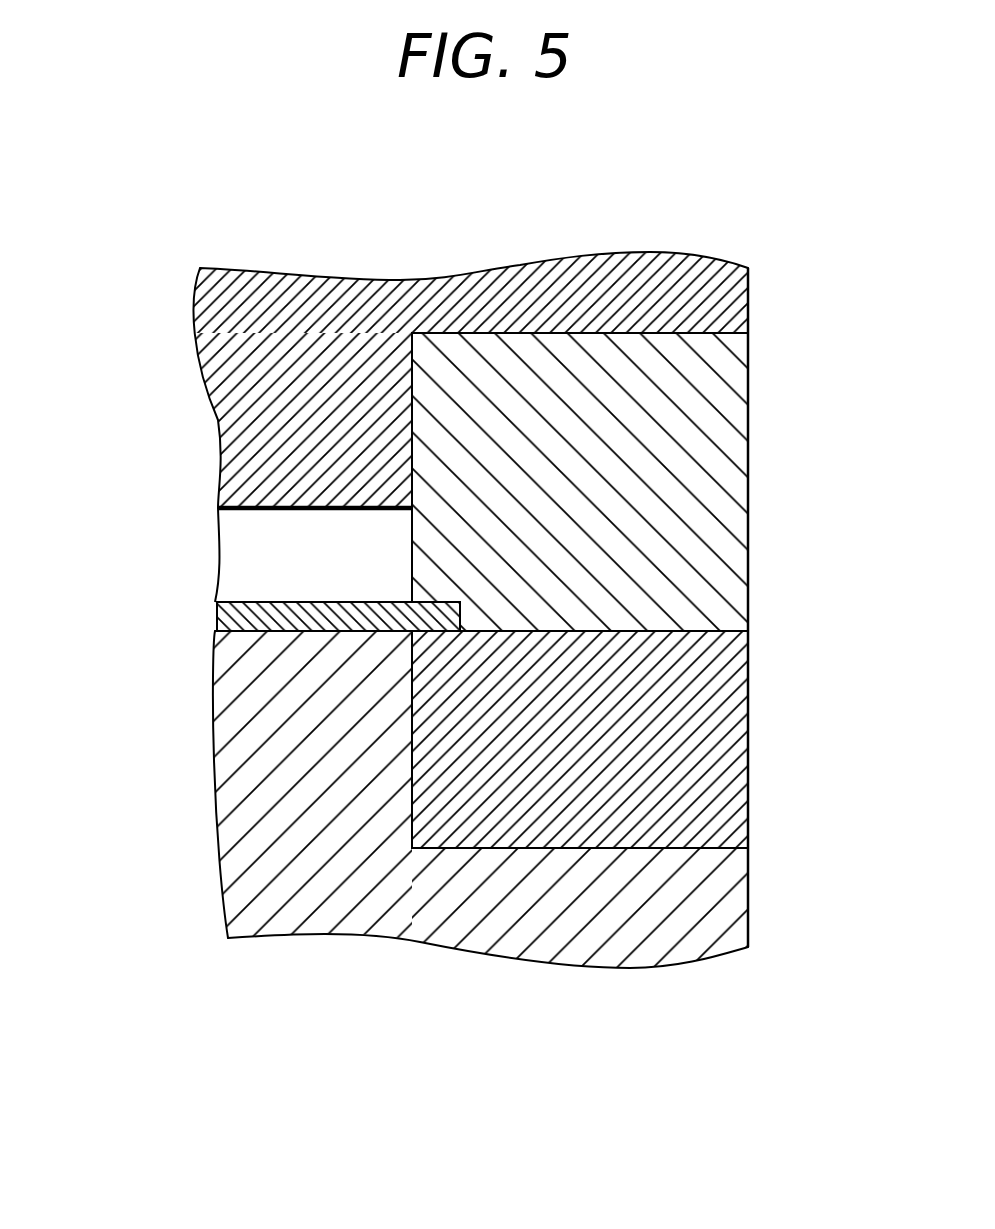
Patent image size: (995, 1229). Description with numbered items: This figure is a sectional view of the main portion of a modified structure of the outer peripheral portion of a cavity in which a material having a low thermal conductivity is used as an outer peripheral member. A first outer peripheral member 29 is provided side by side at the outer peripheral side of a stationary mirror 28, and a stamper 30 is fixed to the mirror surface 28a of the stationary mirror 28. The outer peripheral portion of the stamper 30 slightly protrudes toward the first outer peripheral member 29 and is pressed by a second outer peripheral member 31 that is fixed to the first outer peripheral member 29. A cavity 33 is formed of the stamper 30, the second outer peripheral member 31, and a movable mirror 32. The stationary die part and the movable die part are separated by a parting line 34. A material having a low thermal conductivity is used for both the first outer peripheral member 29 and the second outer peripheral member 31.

The stationary mirror 28 is at (483, 907).
The mirror surface 28a is at (316, 628).
The first outer peripheral member 29 is at (708, 710).
The stamper 30 is at (217, 603).
The second outer peripheral member 31 is at (730, 527).
The movable mirror 32 is at (332, 353).
The cavity 33 is at (217, 533).
The parting line 34 is at (643, 335).